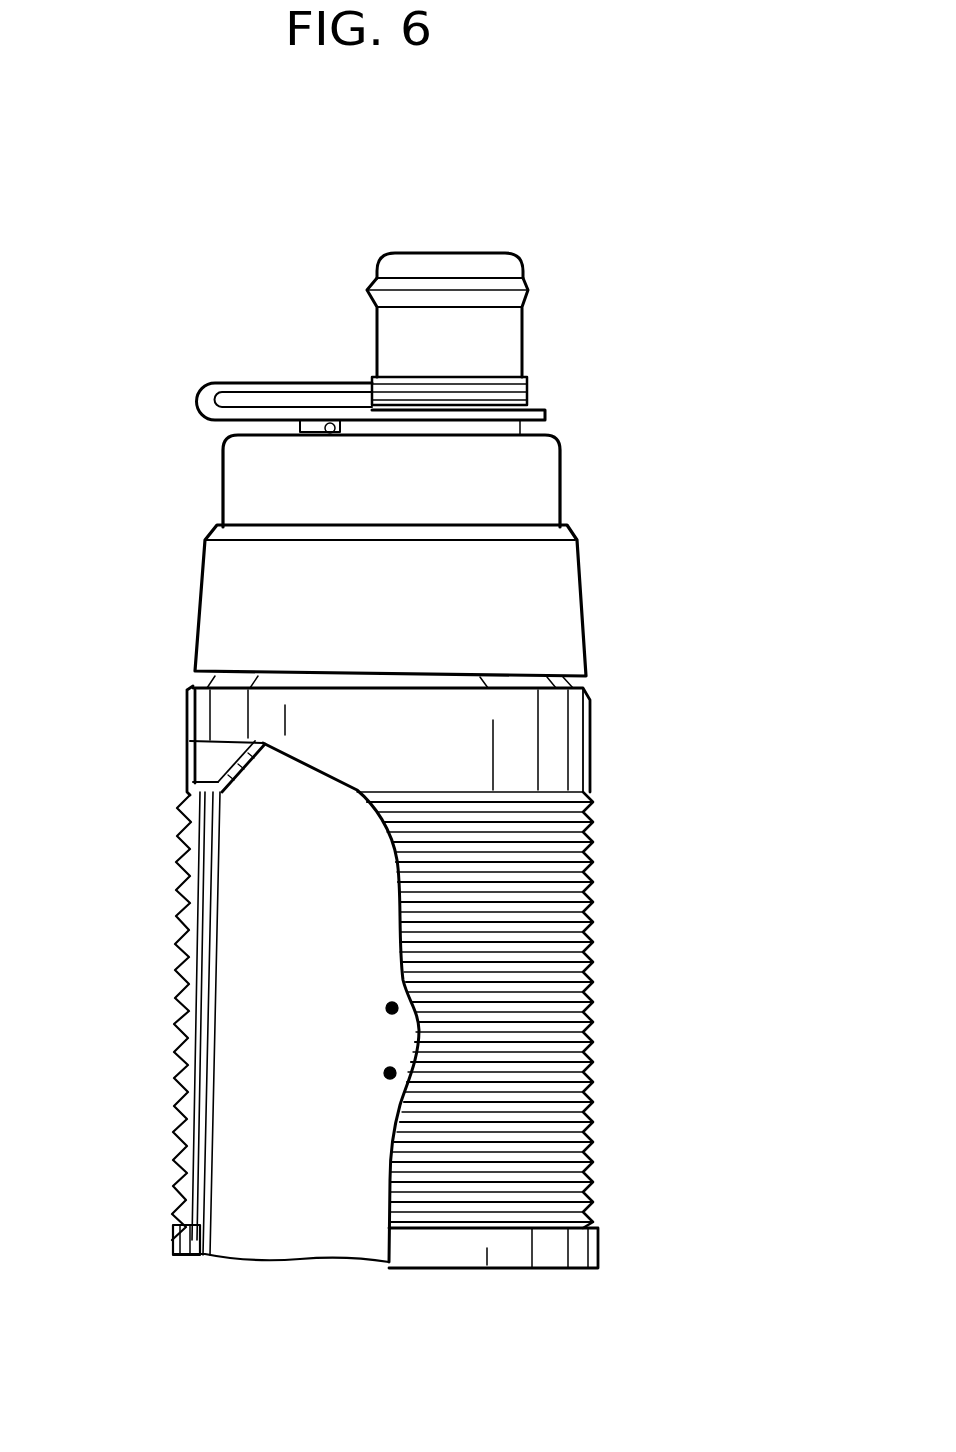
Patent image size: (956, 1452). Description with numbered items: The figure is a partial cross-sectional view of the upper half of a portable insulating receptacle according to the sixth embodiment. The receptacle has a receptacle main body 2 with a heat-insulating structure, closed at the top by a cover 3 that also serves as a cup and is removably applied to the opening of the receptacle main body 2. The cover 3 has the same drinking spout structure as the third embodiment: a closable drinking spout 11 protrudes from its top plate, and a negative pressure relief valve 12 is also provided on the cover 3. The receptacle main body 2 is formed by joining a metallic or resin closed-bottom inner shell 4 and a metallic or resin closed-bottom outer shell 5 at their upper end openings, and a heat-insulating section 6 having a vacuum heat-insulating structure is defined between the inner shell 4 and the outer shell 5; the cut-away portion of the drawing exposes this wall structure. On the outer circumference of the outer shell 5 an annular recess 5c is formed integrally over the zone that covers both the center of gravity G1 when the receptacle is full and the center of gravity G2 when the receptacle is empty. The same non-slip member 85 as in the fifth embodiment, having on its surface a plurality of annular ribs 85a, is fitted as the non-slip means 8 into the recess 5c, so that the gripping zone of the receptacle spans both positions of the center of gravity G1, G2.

The receptacle main body 2 is at (612, 1233).
The cover 3 is at (578, 580).
The inner shell 4 is at (244, 770).
The outer shell 5 is at (186, 752).
The annular recess 5c is at (182, 1001).
The heat-insulating section 6 is at (172, 1244).
The non-slip means 8 is at (608, 1007).
The drinking spout 11 is at (485, 262).
The negative pressure relief valve 12 is at (330, 412).
The non-slip member 85 is at (594, 966).
The annular ribs 85a is at (596, 893).
The center of gravity when the receptacle is full G1 is at (383, 1080).
The center of gravity when the receptacle is empty G2 is at (384, 1003).